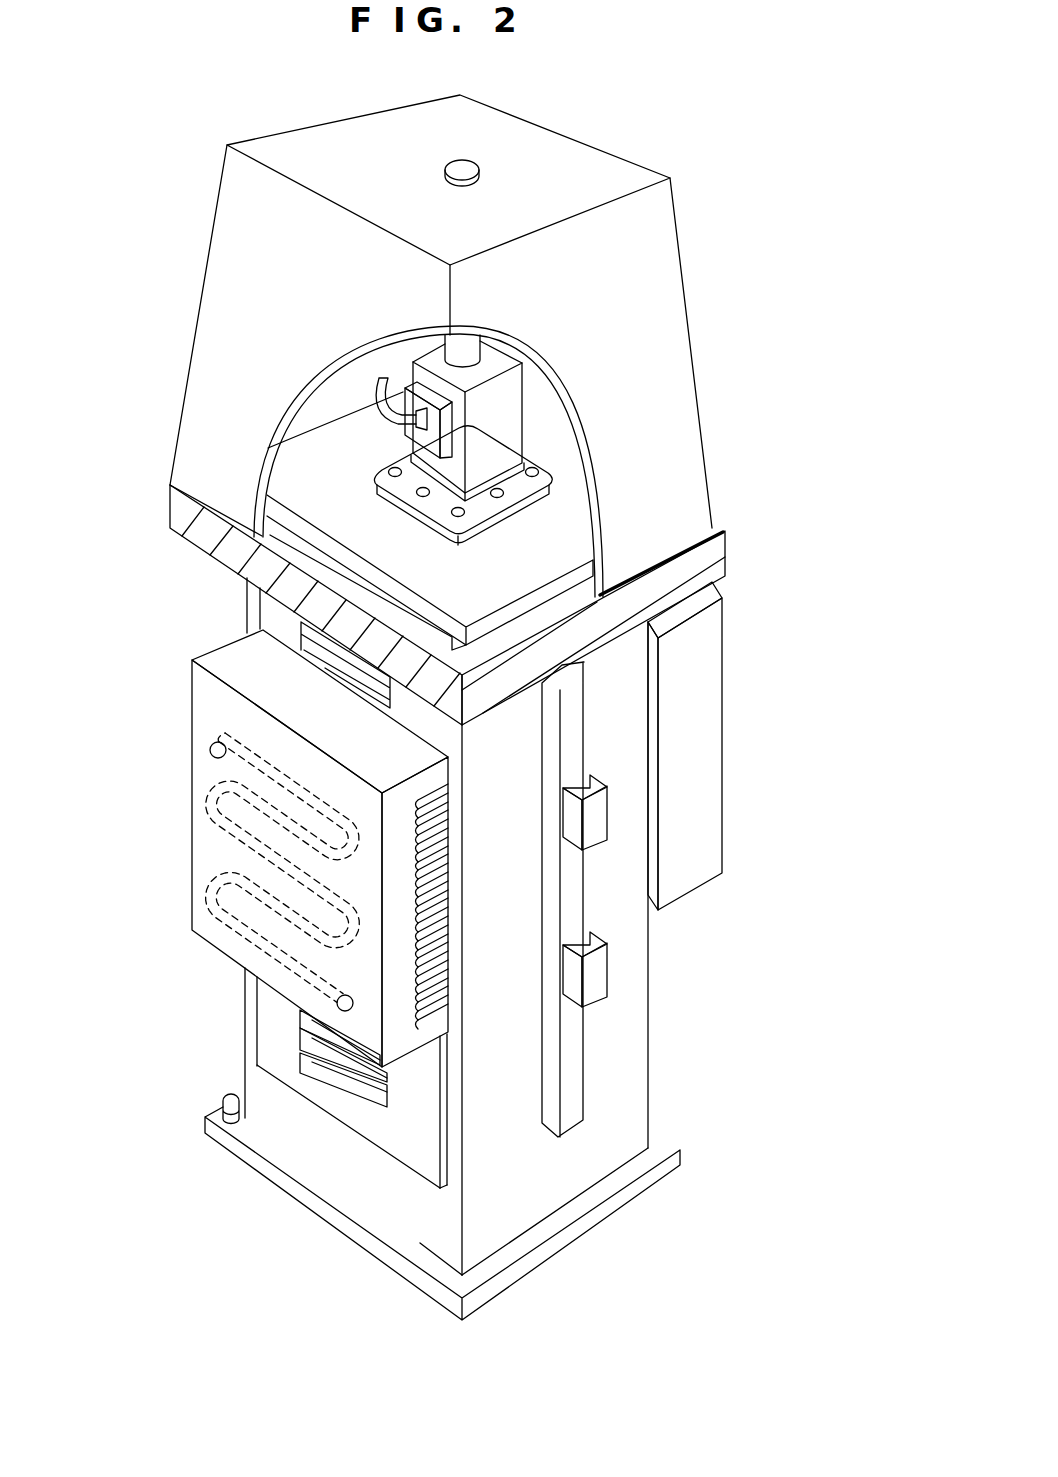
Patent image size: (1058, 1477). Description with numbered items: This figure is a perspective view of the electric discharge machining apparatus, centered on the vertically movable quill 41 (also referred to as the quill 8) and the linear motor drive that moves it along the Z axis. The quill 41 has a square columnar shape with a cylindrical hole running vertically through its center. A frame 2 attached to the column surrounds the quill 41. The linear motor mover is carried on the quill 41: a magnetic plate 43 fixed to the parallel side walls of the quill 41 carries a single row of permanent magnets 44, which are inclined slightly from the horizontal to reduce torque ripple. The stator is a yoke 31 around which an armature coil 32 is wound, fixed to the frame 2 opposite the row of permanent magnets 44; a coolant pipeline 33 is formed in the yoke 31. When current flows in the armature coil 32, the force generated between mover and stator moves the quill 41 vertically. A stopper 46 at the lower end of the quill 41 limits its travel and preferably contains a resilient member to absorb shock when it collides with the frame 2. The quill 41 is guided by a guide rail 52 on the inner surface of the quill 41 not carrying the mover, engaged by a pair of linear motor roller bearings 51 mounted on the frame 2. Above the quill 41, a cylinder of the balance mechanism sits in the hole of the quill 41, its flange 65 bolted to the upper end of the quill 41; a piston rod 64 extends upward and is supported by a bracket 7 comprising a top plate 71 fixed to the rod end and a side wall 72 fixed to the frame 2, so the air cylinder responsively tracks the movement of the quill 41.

The frame 2 is at (717, 527).
The bracket 7 is at (473, 345).
The quill 8 is at (427, 357).
The yoke 31 is at (200, 722).
The armature coil 32 is at (452, 990).
The coolant pipeline 33 is at (237, 922).
The quill 41 is at (641, 1058).
The magnetic plate 43 is at (262, 1050).
The permanent magnets 44 is at (323, 1072).
The stopper 46 is at (243, 1104).
The linear motor roller bearings 51 is at (591, 977).
The guide rail 52 is at (575, 1068).
The piston rod 64 is at (480, 331).
The flange 65 is at (552, 470).
The top plate 71 is at (617, 170).
The side wall 72 is at (692, 382).